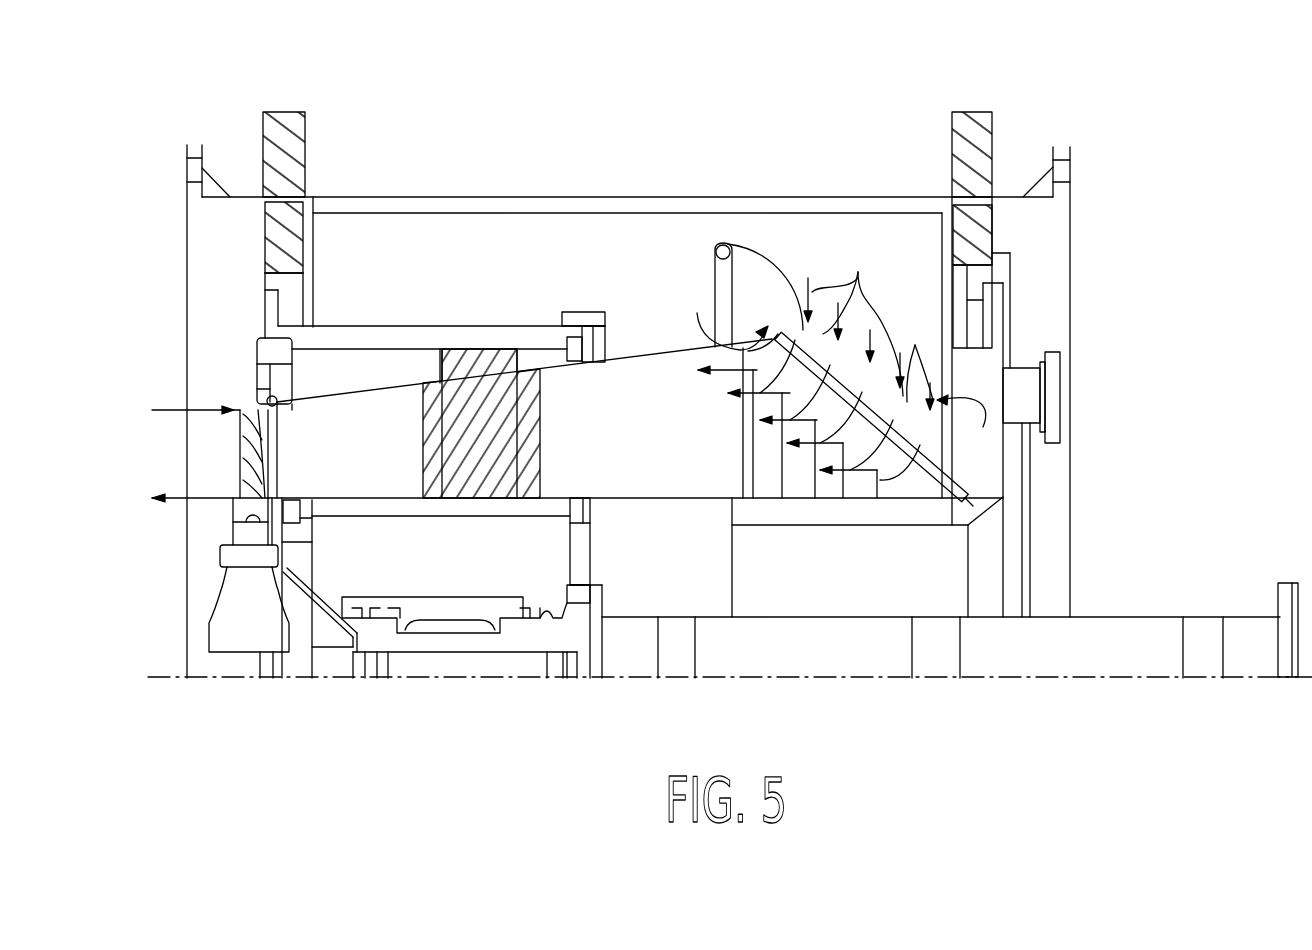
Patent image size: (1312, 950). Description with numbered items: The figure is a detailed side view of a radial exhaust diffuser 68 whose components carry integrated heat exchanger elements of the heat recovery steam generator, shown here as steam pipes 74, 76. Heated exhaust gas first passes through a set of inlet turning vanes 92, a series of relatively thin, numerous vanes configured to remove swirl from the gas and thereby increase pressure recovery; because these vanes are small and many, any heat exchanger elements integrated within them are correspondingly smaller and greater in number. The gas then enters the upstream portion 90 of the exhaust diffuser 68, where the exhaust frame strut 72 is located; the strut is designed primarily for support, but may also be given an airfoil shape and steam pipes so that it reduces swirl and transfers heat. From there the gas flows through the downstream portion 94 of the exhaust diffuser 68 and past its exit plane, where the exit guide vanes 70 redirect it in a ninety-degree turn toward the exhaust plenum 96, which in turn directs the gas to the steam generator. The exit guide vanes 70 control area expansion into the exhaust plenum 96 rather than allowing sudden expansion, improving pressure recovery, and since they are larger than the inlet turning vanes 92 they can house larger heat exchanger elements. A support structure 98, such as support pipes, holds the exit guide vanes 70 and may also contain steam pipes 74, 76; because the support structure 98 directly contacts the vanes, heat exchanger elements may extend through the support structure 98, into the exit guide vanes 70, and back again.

The exhaust diffuser 68 is at (170, 83).
The exit guide vanes 70 is at (788, 286).
The exhaust frame strut 72 is at (478, 357).
The steam pipe 74 is at (165, 409).
The steam pipe 76 is at (157, 533).
The upstream portion 90 is at (372, 400).
The inlet turning vanes 92 is at (240, 425).
The downstream portion 94 is at (623, 378).
The exhaust plenum 96 is at (305, 152).
The support structure 98 is at (927, 493).